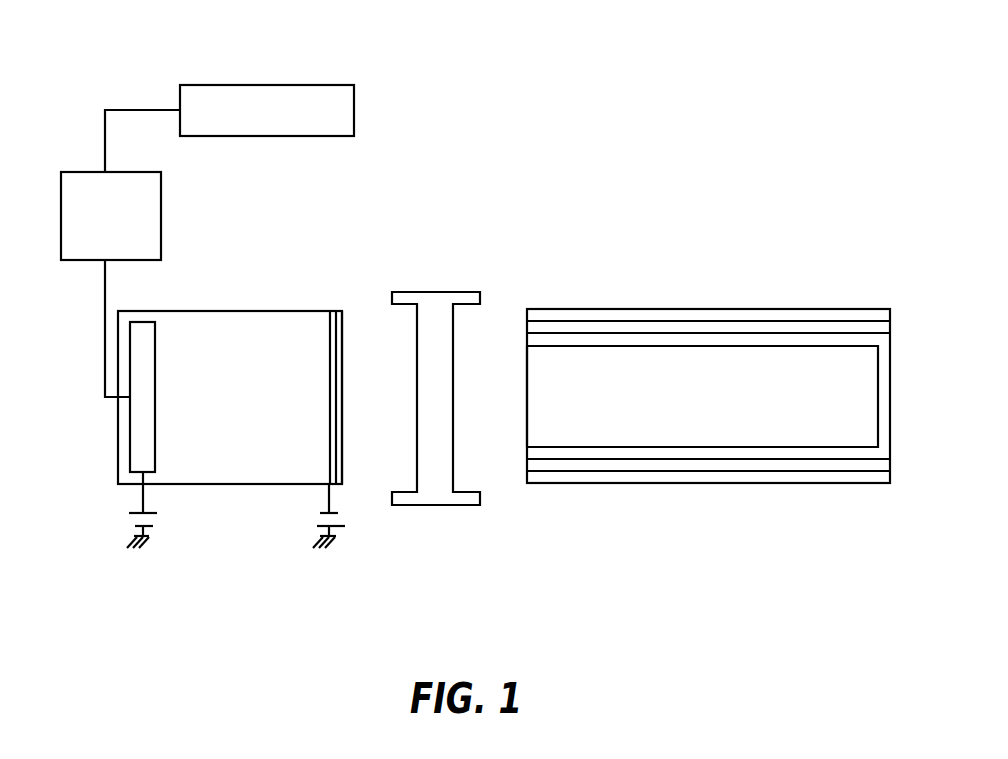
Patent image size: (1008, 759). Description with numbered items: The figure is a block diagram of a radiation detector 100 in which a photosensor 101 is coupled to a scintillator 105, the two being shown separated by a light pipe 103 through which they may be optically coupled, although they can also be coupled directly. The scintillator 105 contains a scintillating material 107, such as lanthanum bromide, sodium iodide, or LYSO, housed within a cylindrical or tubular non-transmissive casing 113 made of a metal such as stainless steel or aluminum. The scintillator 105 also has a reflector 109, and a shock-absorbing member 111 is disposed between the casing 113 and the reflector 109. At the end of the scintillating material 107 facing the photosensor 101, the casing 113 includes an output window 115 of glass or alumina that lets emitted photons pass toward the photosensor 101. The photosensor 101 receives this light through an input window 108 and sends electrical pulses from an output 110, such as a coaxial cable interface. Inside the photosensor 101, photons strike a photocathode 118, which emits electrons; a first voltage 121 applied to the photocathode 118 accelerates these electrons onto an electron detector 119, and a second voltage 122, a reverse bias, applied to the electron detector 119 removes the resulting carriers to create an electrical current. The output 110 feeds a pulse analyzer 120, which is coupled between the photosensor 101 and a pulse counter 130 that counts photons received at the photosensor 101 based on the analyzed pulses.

The radiation detector 100 is at (678, 142).
The photosensor 101 is at (230, 397).
The light pipe 103 is at (442, 505).
The scintillator 105 is at (742, 485).
The scintillating material 107 is at (708, 396).
The input window 108 is at (342, 408).
The reflector 109 is at (757, 342).
The output 110 is at (112, 403).
The shock-absorbing member 111 is at (682, 328).
The casing 113 is at (619, 309).
The output window 115 is at (527, 408).
The photocathode 118 is at (330, 383).
The electron detector 119 is at (155, 370).
The pulse analyzer 120 is at (162, 190).
The first voltage 121 is at (316, 559).
The second voltage 122 is at (132, 559).
The pulse counter 130 is at (267, 85).